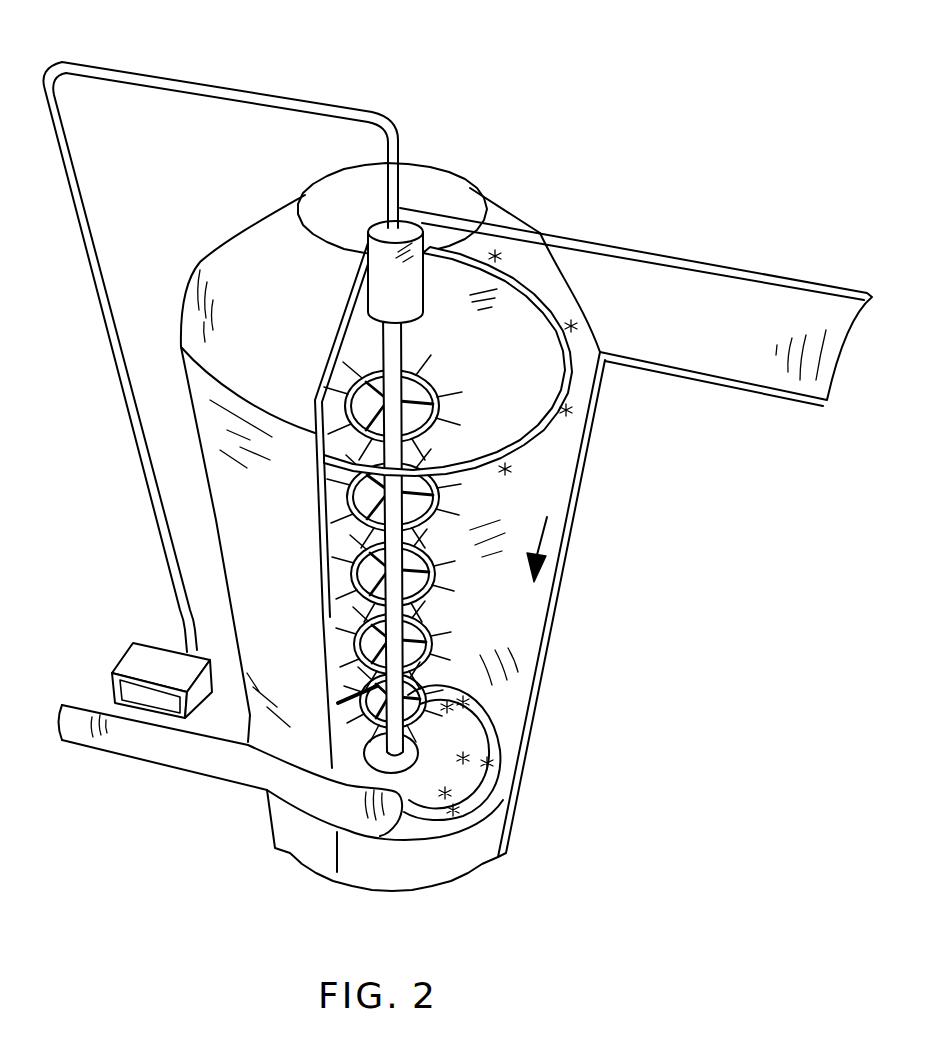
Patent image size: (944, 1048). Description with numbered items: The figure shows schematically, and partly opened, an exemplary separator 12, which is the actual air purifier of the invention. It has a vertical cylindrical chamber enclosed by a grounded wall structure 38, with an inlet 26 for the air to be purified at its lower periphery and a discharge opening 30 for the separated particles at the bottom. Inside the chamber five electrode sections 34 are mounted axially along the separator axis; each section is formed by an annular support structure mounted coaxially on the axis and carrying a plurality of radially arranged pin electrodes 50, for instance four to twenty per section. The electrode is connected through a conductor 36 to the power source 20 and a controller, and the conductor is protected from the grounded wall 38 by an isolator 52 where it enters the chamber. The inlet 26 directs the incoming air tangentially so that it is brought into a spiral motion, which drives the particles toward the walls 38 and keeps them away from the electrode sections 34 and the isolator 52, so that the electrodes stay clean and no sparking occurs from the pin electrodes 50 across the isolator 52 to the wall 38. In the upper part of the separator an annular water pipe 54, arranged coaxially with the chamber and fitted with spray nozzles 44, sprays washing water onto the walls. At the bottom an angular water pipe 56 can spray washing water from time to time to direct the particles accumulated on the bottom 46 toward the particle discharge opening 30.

The separator 12 is at (557, 124).
The power source 20 is at (147, 657).
The inlet 26 is at (313, 789).
The discharge opening 30 is at (407, 762).
The electrode sections 34 is at (447, 600).
The conductor 36 is at (187, 80).
The wall structure 38 is at (257, 257).
The spray nozzles 44 is at (568, 413).
The bottom 46 is at (427, 790).
The pin electrodes 50 is at (462, 378).
The isolator 52 is at (427, 250).
The annular water pipe 54 is at (537, 290).
The angular water pipe 56 is at (460, 806).